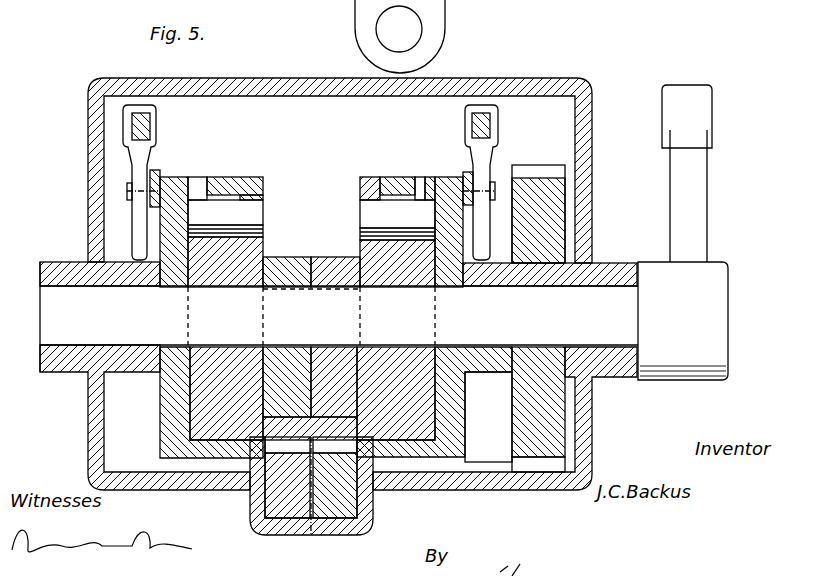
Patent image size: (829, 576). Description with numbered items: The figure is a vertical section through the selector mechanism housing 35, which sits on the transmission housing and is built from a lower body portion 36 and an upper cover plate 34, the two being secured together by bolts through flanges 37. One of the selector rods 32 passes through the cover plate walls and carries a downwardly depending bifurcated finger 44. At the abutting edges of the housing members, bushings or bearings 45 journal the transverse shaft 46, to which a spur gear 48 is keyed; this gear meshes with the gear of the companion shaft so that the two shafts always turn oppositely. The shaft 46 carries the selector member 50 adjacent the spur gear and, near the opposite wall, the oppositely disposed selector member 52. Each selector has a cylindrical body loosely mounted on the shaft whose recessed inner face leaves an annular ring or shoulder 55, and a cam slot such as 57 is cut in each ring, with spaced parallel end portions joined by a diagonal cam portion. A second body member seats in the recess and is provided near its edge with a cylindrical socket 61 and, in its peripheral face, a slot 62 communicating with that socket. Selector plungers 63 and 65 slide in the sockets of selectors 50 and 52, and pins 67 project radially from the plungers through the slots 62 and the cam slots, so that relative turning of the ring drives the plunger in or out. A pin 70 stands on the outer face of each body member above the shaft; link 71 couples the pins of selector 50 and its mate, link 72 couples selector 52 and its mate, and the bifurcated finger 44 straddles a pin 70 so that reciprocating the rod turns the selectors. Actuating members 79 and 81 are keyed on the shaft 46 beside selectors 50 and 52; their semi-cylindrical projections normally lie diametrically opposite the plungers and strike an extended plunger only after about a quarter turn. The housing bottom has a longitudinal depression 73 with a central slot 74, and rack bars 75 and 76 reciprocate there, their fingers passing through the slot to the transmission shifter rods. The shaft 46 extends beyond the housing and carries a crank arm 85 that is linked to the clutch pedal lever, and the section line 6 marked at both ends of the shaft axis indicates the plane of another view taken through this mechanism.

The shaft 6 is at (135, 316).
The selector rod 32 is at (500, 128).
The cover plate 34 is at (80, 172).
The housing for the selector mechanism 35 is at (327, 80).
The body portion 36 is at (88, 424).
The flanges 37 is at (155, 125).
The bifurcated finger 44 is at (138, 172).
The bushings or bearings 45 is at (100, 262).
The shaft 46 is at (600, 321).
The spur gear 48 is at (578, 212).
The selector member 50 is at (407, 175).
The selector member 52 is at (240, 177).
The annular ring or shoulder 55 is at (410, 455).
The cam slot 57 is at (467, 410).
The cylindrical recess or socket 61 is at (262, 244).
The slot 62 is at (384, 170).
The selector plunger 63 is at (372, 214).
The selector plunger 65 is at (258, 218).
The pin 67 is at (205, 177).
The pin 70 is at (497, 180).
The link 71 is at (466, 172).
The link 72 is at (160, 182).
The longitudinal depression 73 is at (375, 513).
The slot 74 is at (350, 535).
The rack bar 75 is at (332, 508).
The rack bar 76 is at (282, 514).
The actuating member 79 is at (319, 262).
The actuating member 81 is at (293, 262).
The crank arm 85 is at (708, 190).